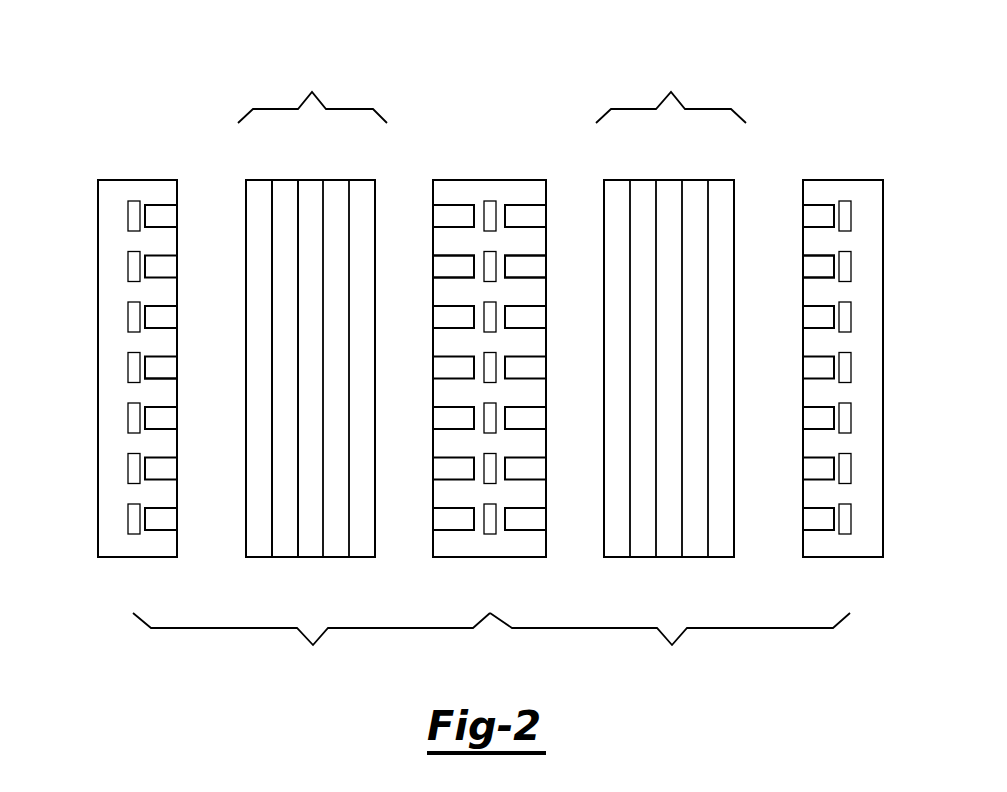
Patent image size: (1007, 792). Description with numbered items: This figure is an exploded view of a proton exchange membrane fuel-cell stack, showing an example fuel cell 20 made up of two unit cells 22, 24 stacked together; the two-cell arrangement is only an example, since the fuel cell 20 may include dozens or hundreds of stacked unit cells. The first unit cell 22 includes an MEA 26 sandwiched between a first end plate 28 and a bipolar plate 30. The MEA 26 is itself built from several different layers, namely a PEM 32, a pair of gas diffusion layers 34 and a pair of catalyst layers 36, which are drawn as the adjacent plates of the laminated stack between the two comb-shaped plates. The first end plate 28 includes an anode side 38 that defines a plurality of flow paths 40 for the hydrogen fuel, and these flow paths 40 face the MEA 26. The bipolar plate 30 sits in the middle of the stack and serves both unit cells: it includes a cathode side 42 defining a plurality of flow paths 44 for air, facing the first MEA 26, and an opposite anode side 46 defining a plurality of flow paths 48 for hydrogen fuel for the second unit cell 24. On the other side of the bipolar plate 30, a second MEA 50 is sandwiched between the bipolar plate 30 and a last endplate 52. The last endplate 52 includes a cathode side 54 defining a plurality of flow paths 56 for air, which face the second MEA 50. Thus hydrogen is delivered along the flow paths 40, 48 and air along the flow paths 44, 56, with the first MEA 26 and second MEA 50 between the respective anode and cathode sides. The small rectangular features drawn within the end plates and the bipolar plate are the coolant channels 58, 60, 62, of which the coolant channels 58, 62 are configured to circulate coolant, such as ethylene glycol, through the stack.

The fuel cell 20 is at (136, 95).
The first unit cell 22 is at (311, 643).
The second unit cell 24 is at (670, 643).
The MEA 26 is at (295, 332).
The first end plate 28 is at (112, 180).
The bipolar plate 30 is at (460, 180).
The PEM 32 is at (310, 195).
The gas diffusion layers 34 is at (258, 318).
The catalyst layers 36 is at (290, 543).
The anode side 38 is at (180, 190).
The flow paths 40 is at (180, 367).
The cathode side 42 is at (433, 190).
The flow paths 44 is at (433, 265).
The anode side 46 is at (546, 190).
The flow paths 48 is at (545, 265).
The second MEA 50 is at (671, 308).
The last endplate 52 is at (830, 180).
The cathode side 54 is at (803, 190).
The flow paths 56 is at (793, 265).
The coolant channels 58 is at (128, 470).
The second elements 60 is at (496, 465).
The coolant channels 62 is at (851, 465).